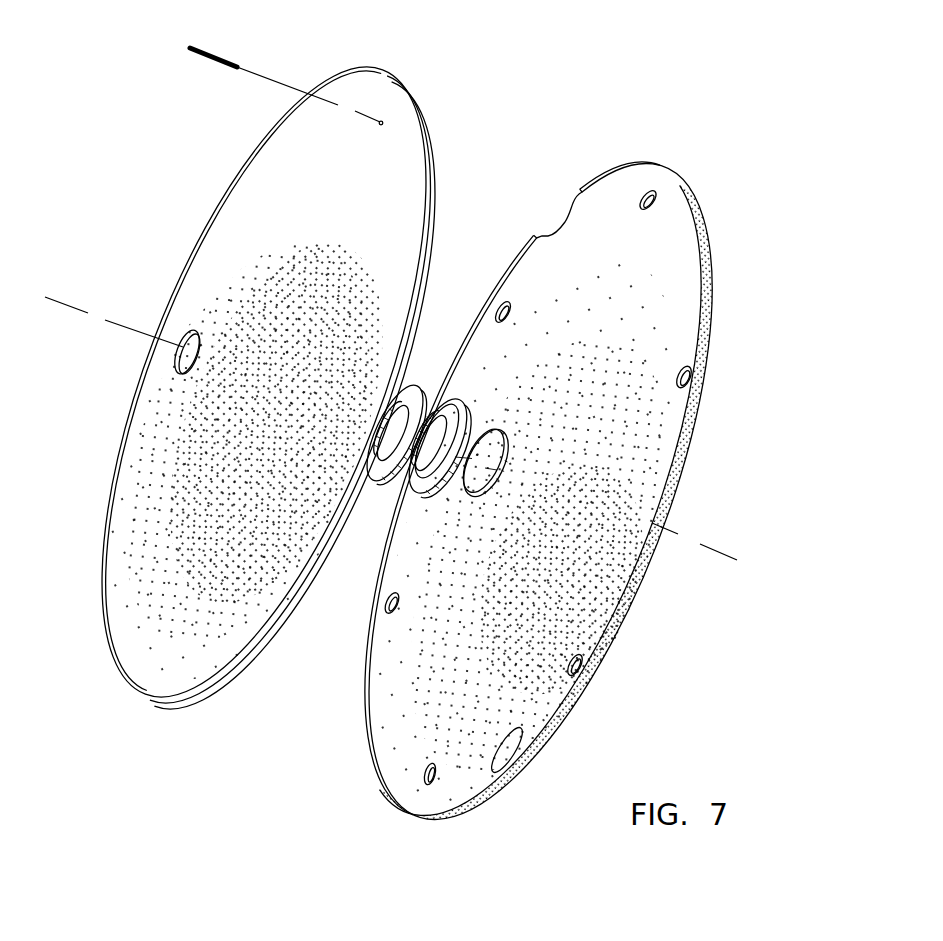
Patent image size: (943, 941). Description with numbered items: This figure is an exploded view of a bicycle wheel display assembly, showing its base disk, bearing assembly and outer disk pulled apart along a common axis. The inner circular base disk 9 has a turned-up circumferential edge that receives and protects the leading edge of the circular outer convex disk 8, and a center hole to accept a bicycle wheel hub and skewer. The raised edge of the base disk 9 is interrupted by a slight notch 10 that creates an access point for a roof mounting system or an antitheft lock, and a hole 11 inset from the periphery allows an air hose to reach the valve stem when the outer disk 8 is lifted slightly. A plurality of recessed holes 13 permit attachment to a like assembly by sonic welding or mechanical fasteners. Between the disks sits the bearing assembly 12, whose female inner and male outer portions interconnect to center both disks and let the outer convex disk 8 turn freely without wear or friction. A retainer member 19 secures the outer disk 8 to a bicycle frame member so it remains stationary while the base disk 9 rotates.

The circular outer convex disk 8 is at (403, 137).
The base disk 9 is at (580, 499).
The notch 10 is at (568, 213).
The hole 11 is at (530, 750).
The bearing assembly 12 is at (463, 393).
The recessed holes 13 is at (695, 360).
The retainer member 19 is at (217, 56).